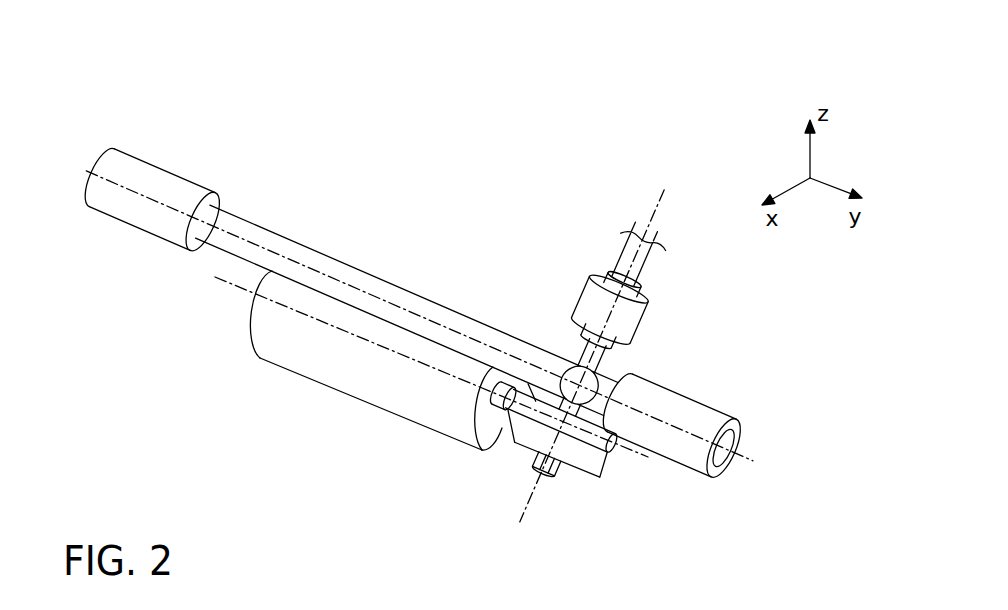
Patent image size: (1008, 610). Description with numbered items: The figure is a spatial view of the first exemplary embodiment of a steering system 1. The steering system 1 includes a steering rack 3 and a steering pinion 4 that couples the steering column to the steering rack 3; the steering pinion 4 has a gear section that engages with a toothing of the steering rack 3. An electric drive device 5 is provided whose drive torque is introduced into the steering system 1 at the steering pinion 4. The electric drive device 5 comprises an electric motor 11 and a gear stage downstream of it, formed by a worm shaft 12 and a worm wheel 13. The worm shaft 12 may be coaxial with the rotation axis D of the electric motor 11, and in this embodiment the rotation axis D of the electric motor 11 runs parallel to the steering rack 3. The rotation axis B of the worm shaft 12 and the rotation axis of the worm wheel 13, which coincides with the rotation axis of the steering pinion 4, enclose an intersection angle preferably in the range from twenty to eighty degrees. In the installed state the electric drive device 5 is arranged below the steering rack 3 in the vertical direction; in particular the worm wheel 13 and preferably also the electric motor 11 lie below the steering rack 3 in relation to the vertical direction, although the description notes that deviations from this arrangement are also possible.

The steering system 1 is at (175, 100).
The steering rack 3 is at (252, 230).
The steering pinion 4 is at (595, 297).
The electric drive device 5 is at (295, 353).
The electric motor 11 is at (430, 403).
The worm shaft 12 is at (603, 445).
The worm wheel 13 is at (517, 437).
The rotation axis of the electric motor D is at (392, 350).
The rotation axis of the worm shaft B is at (628, 453).